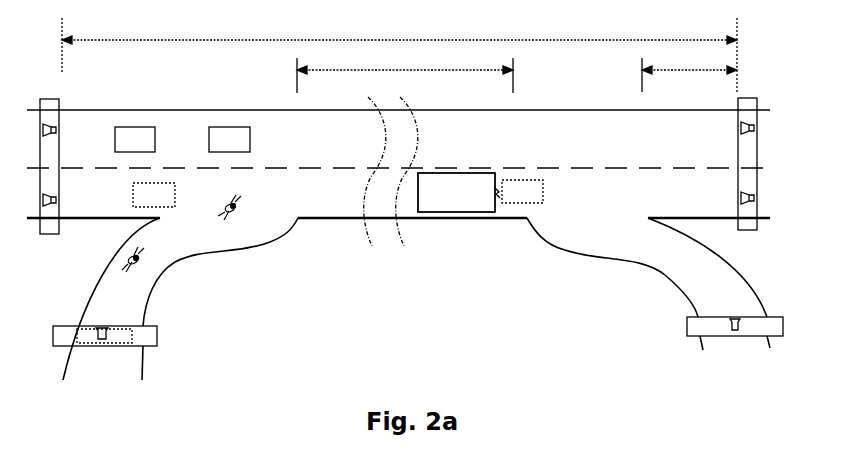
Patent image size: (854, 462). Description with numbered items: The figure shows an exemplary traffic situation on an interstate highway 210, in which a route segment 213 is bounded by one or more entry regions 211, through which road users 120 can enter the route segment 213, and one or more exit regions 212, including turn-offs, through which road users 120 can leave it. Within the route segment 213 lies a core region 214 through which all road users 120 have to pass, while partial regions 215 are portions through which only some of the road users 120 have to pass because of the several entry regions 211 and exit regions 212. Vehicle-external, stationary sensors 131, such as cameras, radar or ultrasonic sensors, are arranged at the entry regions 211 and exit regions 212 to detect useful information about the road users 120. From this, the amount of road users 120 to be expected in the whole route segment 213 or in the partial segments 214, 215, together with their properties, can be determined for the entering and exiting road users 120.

The road user 120 is at (128, 127).
The sensor 131 is at (52, 130).
The interstate highway 210 is at (400, 280).
The entry region 211 is at (50, 98).
The exit region 212 is at (748, 100).
The route segment 213 is at (164, 42).
The core region 214 is at (458, 70).
The partial region 215 is at (685, 70).